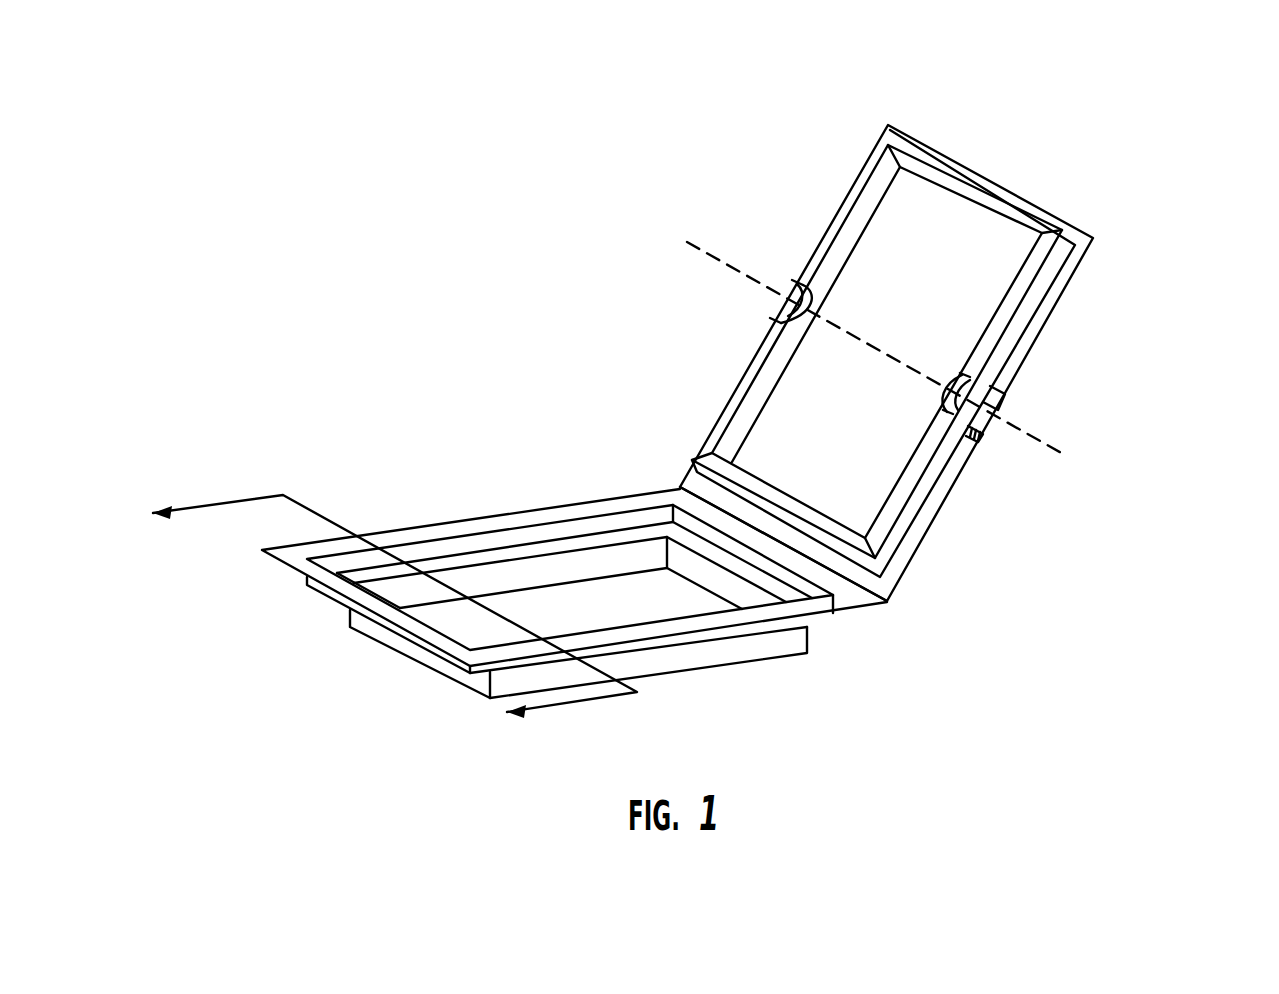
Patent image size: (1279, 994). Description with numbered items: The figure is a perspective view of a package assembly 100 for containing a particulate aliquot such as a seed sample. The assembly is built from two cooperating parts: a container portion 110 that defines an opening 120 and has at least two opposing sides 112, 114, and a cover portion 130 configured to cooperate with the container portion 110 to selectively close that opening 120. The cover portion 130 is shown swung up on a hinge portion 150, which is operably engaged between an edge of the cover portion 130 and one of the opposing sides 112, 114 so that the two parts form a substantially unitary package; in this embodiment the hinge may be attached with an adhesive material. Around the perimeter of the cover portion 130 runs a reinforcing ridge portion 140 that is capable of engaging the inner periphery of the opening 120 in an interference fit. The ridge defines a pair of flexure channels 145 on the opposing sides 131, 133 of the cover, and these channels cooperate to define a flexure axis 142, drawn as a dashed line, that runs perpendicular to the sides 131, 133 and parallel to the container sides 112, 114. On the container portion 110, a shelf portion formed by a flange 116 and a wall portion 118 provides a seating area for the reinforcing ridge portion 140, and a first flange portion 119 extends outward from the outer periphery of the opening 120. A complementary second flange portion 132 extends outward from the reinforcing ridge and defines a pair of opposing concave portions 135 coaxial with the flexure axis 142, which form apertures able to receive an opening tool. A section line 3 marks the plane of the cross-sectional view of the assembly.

The package assembly 100 is at (322, 252).
The container portion 110 is at (688, 662).
The opposing side 112 is at (395, 632).
The opposing side 114 is at (812, 636).
The flange 116 is at (610, 535).
The wall portion 118 is at (656, 513).
The first flange portion 119 is at (433, 532).
The opening 120 is at (537, 572).
The cover portion 130 is at (965, 248).
The opposing side 131 is at (742, 344).
The second flange portion 132 is at (853, 185).
The opposing side 133 is at (1080, 314).
The concave portions 135 is at (787, 290).
The reinforcing ridge portion 140 is at (890, 515).
The flexure axis 142 is at (702, 242).
The flexure channels 145 is at (797, 307).
The hinge portion 150 is at (887, 603).
The section line 3- 3 is at (385, 615).